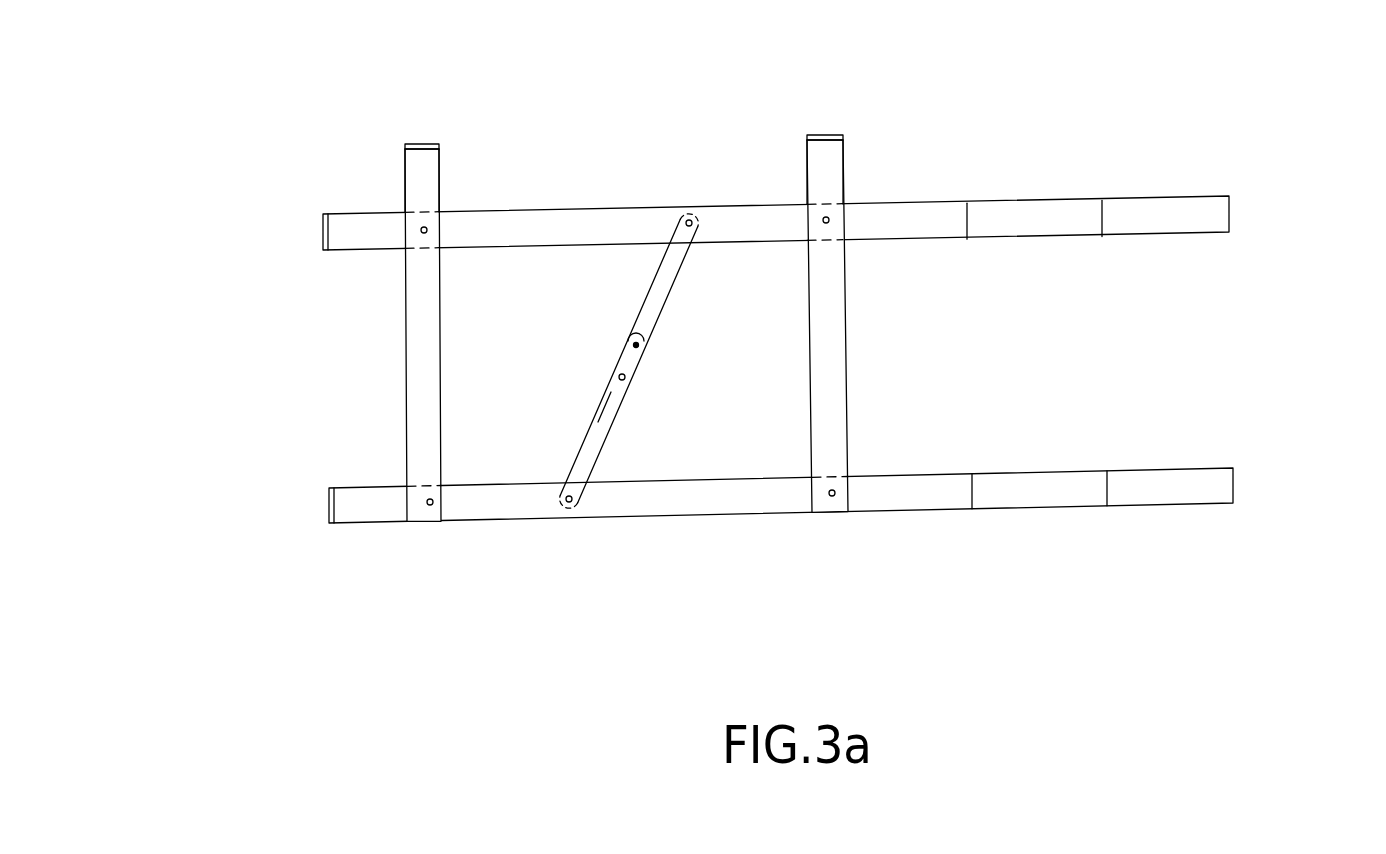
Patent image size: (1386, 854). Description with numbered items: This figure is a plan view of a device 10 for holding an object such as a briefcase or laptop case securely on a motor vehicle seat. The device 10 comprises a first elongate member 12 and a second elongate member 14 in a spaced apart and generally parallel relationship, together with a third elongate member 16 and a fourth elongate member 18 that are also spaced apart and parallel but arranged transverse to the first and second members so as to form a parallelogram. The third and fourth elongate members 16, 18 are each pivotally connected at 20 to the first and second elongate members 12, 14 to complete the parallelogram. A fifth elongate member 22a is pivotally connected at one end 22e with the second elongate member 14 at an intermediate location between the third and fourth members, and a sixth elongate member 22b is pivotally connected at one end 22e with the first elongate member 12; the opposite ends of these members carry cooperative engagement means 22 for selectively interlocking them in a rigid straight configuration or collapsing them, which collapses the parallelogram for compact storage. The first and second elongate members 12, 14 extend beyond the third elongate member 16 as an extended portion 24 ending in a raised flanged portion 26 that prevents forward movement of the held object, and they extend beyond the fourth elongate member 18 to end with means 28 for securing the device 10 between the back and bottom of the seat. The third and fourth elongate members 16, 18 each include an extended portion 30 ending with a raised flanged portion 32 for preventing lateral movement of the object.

The device 10 is at (777, 376).
The first elongate member 12 is at (708, 248).
The second elongate member 14 is at (798, 597).
The third elongate member 16 is at (430, 412).
The fourth elongate member 18 is at (830, 385).
The pivotal connection 20 is at (428, 227).
The cooperative engagement means 22 is at (631, 438).
The fifth elongate member 22a is at (598, 422).
The sixth elongate member 22b is at (650, 310).
The pivotally connected end 22e is at (571, 504).
The extended portion 24 is at (373, 510).
The raised flanged portion 26 is at (323, 233).
The securing means 28 is at (1158, 534).
The extended portion 30 is at (423, 184).
The raised flanged portion 32 is at (425, 144).